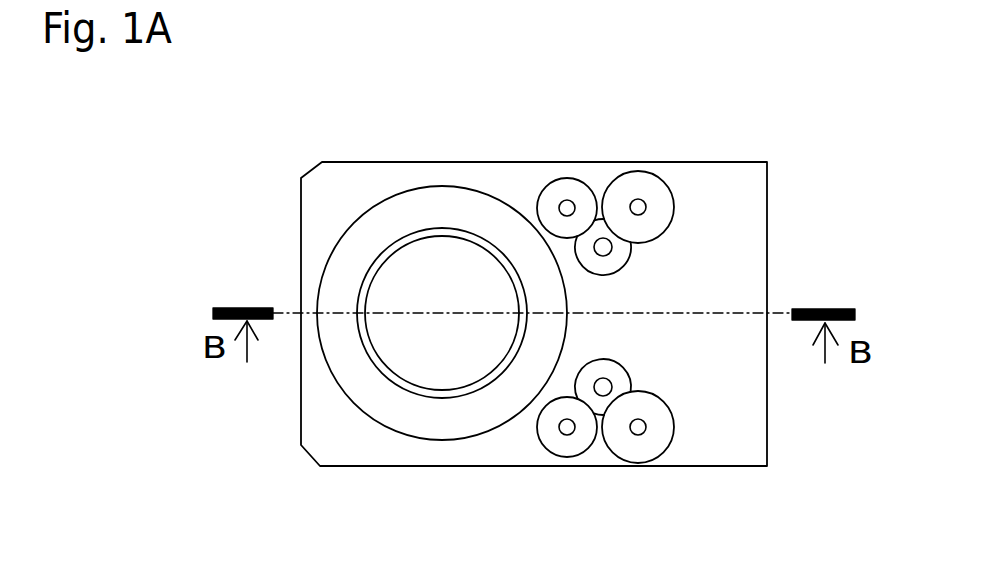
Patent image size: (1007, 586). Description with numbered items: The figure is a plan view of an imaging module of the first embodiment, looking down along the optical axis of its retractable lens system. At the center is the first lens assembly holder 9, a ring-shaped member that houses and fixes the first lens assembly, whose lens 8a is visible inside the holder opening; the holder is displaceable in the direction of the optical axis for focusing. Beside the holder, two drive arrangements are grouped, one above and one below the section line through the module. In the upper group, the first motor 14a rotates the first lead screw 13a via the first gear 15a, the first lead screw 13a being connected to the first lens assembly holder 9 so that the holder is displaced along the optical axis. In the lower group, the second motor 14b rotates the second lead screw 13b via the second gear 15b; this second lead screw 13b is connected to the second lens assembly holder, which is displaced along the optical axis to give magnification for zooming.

The first lens assembly holder 9 is at (355, 247).
The lens 8a is at (418, 270).
The first lead screw 13a is at (575, 189).
The first motor 14a is at (657, 203).
The first gear 15a is at (613, 267).
The second lead screw 13b is at (567, 432).
The second motor 14b is at (657, 428).
The second gear 15b is at (615, 370).